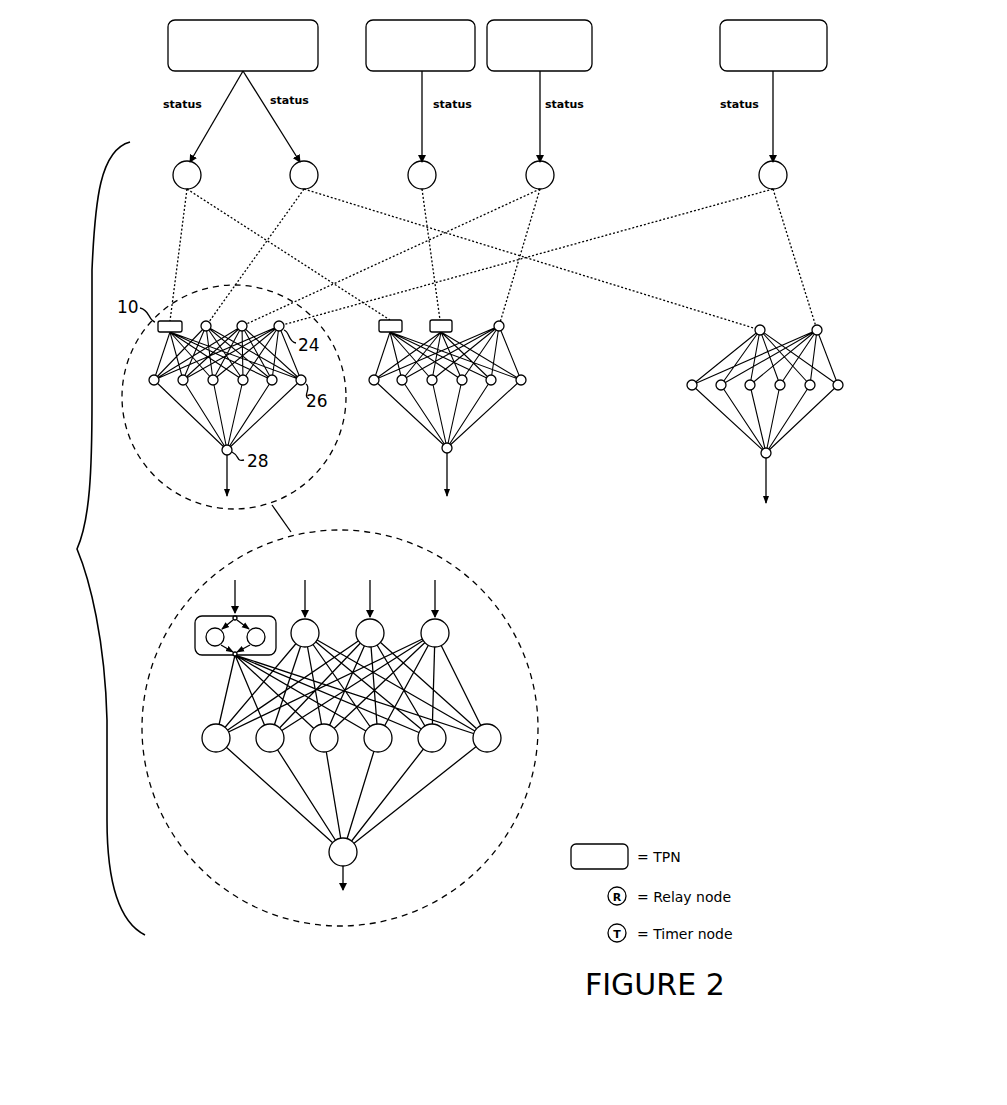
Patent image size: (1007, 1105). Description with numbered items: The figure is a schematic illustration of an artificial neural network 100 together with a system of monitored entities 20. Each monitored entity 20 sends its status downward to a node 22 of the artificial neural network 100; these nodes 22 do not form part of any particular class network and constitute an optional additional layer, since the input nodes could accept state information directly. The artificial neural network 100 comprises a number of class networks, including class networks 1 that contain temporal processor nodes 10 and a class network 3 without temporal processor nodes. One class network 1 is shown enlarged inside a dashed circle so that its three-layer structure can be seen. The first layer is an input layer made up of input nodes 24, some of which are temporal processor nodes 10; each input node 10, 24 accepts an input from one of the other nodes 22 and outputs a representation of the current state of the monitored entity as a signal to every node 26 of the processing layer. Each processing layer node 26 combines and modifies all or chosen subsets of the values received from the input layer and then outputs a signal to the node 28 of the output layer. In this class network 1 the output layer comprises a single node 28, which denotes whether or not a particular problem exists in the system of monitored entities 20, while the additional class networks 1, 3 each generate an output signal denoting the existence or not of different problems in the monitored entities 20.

The monitored entity 20 is at (296, 20).
The other node 22 is at (201, 172).
The temporal processor node 10 is at (196, 646).
The input node 24 is at (449, 638).
The processing layer node 26 is at (496, 750).
The output layer node 28 is at (357, 852).
The class network with temporal processor nodes 1 is at (508, 606).
The class network without temporal processor nodes 3 is at (819, 432).
The artificial neural network 100 is at (80, 538).